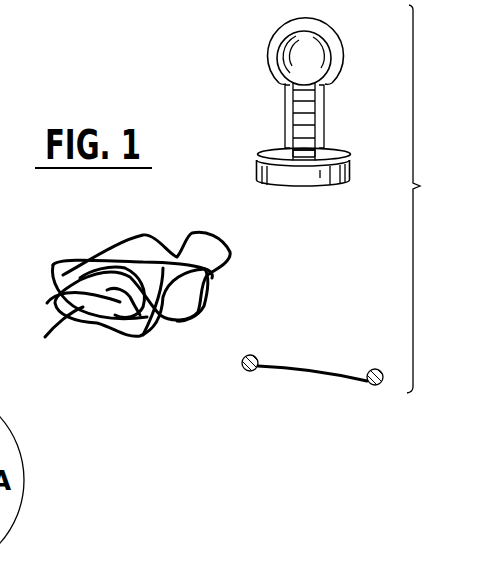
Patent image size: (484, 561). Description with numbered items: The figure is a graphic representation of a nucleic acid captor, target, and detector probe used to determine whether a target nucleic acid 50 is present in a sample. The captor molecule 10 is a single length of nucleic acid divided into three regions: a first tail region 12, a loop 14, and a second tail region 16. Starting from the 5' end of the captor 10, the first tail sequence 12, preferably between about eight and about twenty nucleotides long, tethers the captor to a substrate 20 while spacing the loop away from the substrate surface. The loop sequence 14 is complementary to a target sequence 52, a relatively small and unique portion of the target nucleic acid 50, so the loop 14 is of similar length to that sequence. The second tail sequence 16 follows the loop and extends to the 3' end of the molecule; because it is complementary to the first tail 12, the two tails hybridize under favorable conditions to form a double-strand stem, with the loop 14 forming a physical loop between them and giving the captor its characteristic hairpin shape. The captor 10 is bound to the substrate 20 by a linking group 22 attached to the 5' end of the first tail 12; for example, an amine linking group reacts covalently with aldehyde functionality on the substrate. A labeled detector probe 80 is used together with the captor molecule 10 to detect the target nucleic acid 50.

The captor molecule 10 is at (228, 110).
The loop 14 is at (333, 35).
The first tail region 12 is at (283, 113).
The second tail region 16 is at (325, 106).
The substrate 20 is at (340, 172).
The linking group 22 is at (292, 158).
The target nucleic acid 50 is at (259, 273).
The target sequence 52 is at (209, 290).
The labeled detector probe 80 is at (321, 359).
The 5' end 5' is at (271, 141).
The 3' end 3' is at (338, 141).